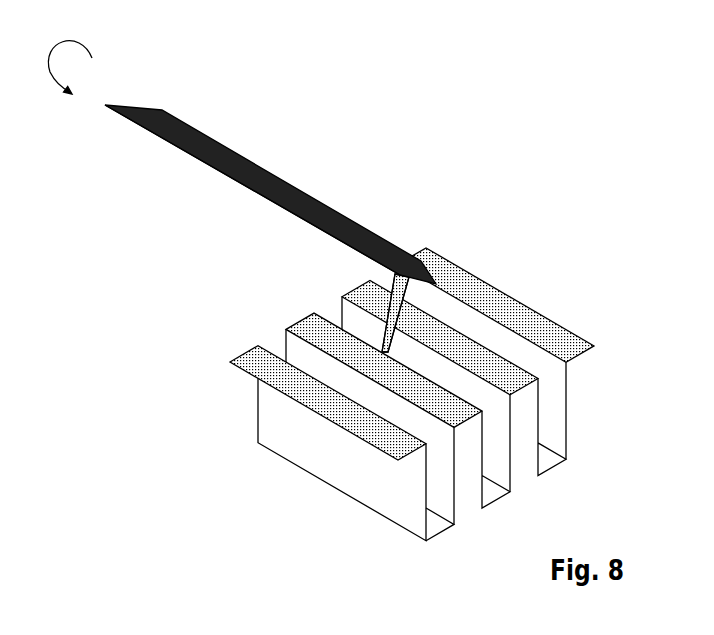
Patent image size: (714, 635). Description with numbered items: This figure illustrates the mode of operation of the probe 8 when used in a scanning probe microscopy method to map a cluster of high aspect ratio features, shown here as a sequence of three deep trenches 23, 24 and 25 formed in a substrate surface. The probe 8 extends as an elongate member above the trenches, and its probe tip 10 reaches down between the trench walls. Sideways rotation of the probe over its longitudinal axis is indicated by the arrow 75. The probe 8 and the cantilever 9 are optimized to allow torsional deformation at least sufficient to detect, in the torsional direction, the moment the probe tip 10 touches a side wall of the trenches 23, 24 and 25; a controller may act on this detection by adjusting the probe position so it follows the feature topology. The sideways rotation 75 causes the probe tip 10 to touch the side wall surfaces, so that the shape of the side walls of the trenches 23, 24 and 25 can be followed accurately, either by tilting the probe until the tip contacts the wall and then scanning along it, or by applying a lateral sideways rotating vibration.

The probe 8 is at (237, 155).
The cantilever 9 is at (263, 181).
The probe tip 10 is at (395, 279).
The trench 23 is at (445, 526).
The trench 24 is at (503, 496).
The trench 25 is at (557, 472).
The sideways rotation arrow 75 is at (92, 58).